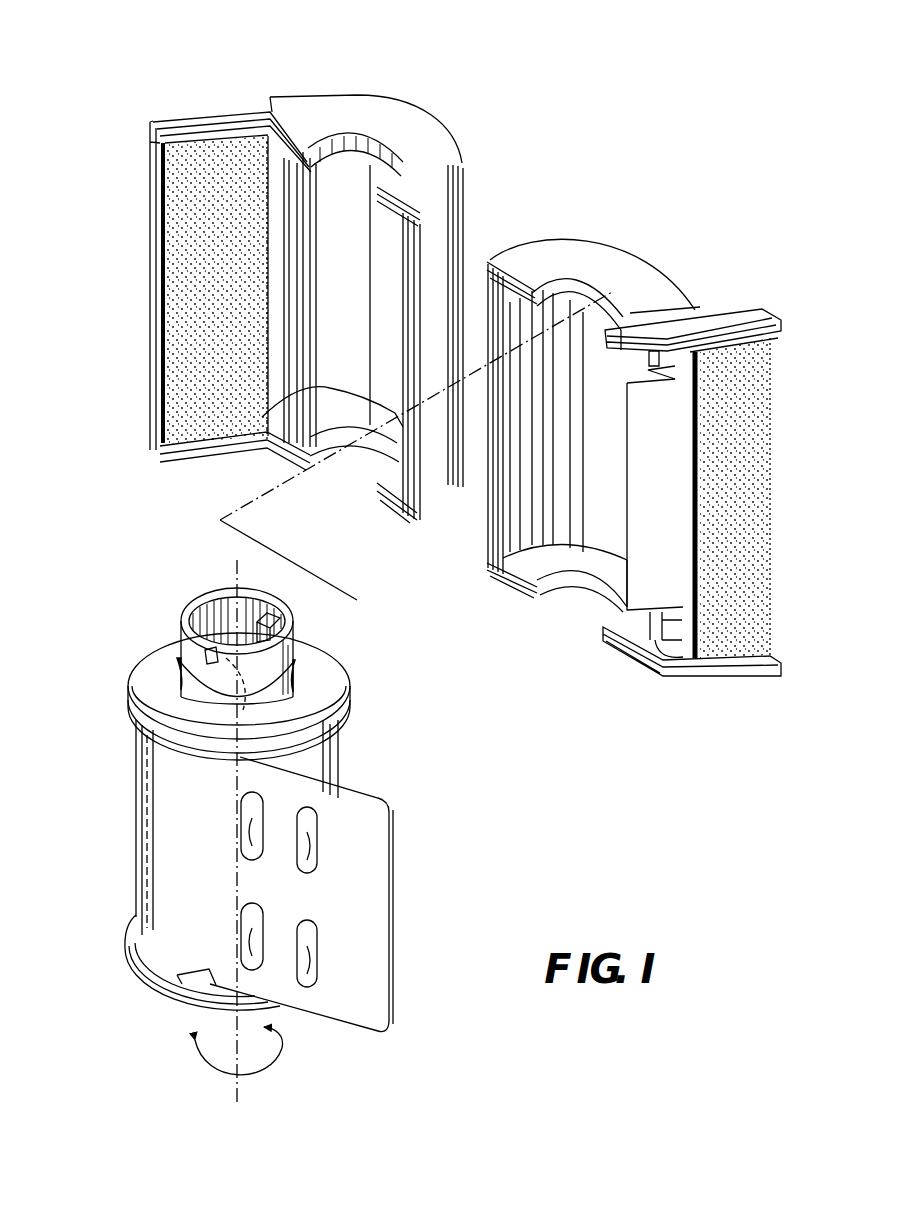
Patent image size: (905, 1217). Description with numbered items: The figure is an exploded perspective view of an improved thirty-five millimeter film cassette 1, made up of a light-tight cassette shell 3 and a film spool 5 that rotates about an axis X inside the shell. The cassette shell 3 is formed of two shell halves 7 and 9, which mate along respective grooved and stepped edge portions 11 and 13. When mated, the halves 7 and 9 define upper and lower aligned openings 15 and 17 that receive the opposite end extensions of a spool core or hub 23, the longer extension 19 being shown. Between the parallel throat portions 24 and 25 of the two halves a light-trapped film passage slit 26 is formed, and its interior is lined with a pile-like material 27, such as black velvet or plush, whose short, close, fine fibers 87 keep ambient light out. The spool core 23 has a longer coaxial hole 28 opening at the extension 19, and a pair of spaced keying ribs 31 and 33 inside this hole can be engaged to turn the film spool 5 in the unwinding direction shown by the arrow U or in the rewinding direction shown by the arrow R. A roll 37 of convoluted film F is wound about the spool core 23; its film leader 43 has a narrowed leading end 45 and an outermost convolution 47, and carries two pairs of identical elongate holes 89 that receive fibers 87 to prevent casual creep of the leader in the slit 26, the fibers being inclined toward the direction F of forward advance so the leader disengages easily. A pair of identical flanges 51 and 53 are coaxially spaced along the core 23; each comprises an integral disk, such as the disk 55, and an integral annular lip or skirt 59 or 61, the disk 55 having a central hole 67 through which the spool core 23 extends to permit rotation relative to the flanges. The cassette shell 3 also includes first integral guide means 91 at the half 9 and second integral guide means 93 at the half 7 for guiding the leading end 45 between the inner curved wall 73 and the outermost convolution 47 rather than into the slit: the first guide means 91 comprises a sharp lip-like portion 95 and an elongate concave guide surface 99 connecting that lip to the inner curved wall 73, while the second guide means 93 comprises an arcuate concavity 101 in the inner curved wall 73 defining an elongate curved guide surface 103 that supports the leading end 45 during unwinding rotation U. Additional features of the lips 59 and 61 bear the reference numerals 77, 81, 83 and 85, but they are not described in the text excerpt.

The film cassette 1 is at (262, 90).
The cassette shell 3 is at (470, 170).
The film spool 5 is at (347, 777).
The shell half 7 is at (404, 108).
The shell half 9 is at (615, 290).
The grooved and stepped edge portion 11 is at (160, 178).
The grooved and stepped edge portion 13 is at (487, 292).
The upper aligned opening 15 is at (358, 145).
The lower aligned opening 17 is at (612, 293).
The longer end extension 19 is at (180, 610).
The spool core 23 is at (304, 655).
The throat portion 24 is at (172, 106).
The throat portion 25 is at (733, 317).
The film passage slit 26 is at (170, 367).
The pile-like material 27 is at (217, 361).
The longer coaxial hole 28 is at (222, 600).
The keying rib 31 is at (252, 632).
The keying rib 33 is at (248, 700).
The film roll 37 is at (133, 782).
The film leader 43 is at (240, 973).
The leading end 45 is at (390, 873).
The outermost convolution 47 is at (147, 830).
The flange 51 is at (357, 698).
The flange 53 is at (131, 986).
The disk 55 is at (160, 682).
The annular lip 59 is at (333, 717).
The annular lip 61 is at (157, 993).
The central hole 67 is at (180, 656).
The inner curved wall 73 is at (350, 183).
The rim edge 77 is at (140, 700).
The bottom clip 81 is at (657, 635).
The semicircular opening 83 is at (392, 160).
The inner wall surface 85 is at (343, 412).
The fibers 87 is at (170, 258).
The elongate holes 89 is at (245, 920).
The first guide means 91 is at (655, 470).
The second guide means 93 is at (278, 375).
The lip-like portion 95 is at (627, 543).
The concave guide surface 99 is at (650, 370).
The arcuate concavity 101 is at (255, 318).
The curved guide surface 103 is at (320, 285).
The film F is at (142, 857).
The rewinding direction R is at (195, 1043).
The unwinding direction u is at (266, 1026).
The axis X is at (240, 1087).